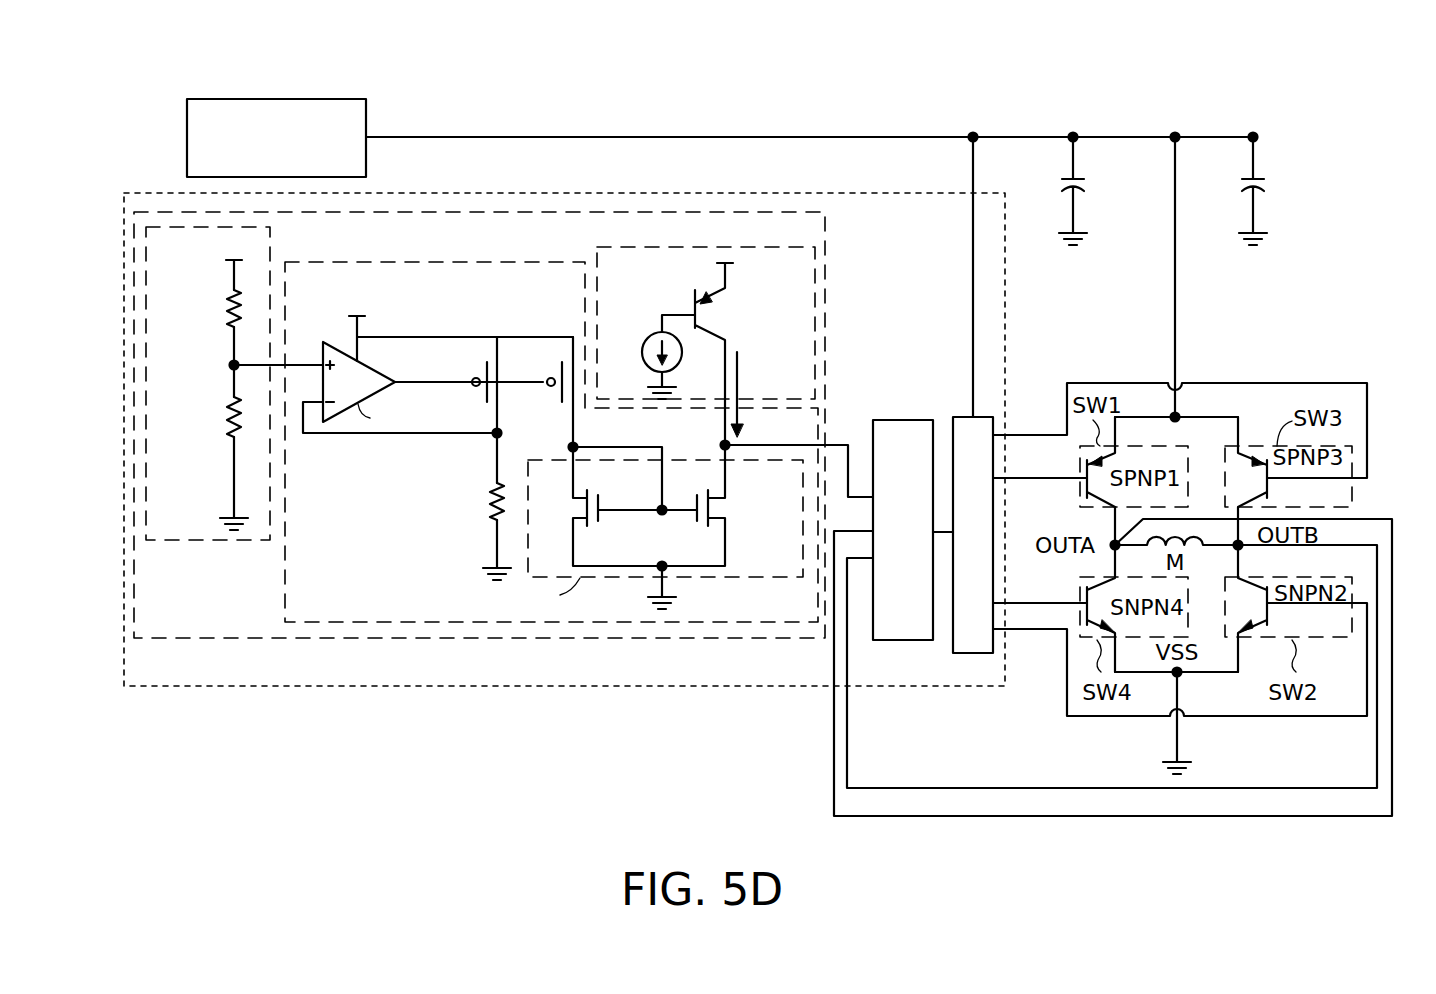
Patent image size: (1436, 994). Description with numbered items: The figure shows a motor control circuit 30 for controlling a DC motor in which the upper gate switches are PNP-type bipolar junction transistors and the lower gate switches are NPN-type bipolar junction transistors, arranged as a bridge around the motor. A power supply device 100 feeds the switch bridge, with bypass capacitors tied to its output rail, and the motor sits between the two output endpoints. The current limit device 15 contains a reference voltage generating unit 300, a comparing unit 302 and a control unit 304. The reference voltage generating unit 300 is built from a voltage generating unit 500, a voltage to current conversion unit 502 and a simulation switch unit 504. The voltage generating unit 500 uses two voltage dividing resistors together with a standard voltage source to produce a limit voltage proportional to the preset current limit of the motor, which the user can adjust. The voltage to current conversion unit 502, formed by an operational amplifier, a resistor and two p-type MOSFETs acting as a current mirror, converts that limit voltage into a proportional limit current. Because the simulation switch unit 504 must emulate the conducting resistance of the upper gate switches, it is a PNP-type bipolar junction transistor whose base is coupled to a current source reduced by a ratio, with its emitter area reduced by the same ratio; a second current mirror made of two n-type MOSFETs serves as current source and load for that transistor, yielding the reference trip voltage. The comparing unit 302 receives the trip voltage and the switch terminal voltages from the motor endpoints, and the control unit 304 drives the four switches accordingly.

The power supply device 100 is at (192, 99).
The motor control circuit 30 is at (1290, 96).
The current limit device 15 is at (215, 688).
The reference voltage generating unit 300 is at (210, 640).
The voltage generating unit 500 is at (225, 543).
The voltage to current conversion unit 502 is at (535, 260).
The simulation switch unit 504 is at (803, 250).
The comparing unit 302 is at (910, 420).
The control unit 304 is at (965, 415).